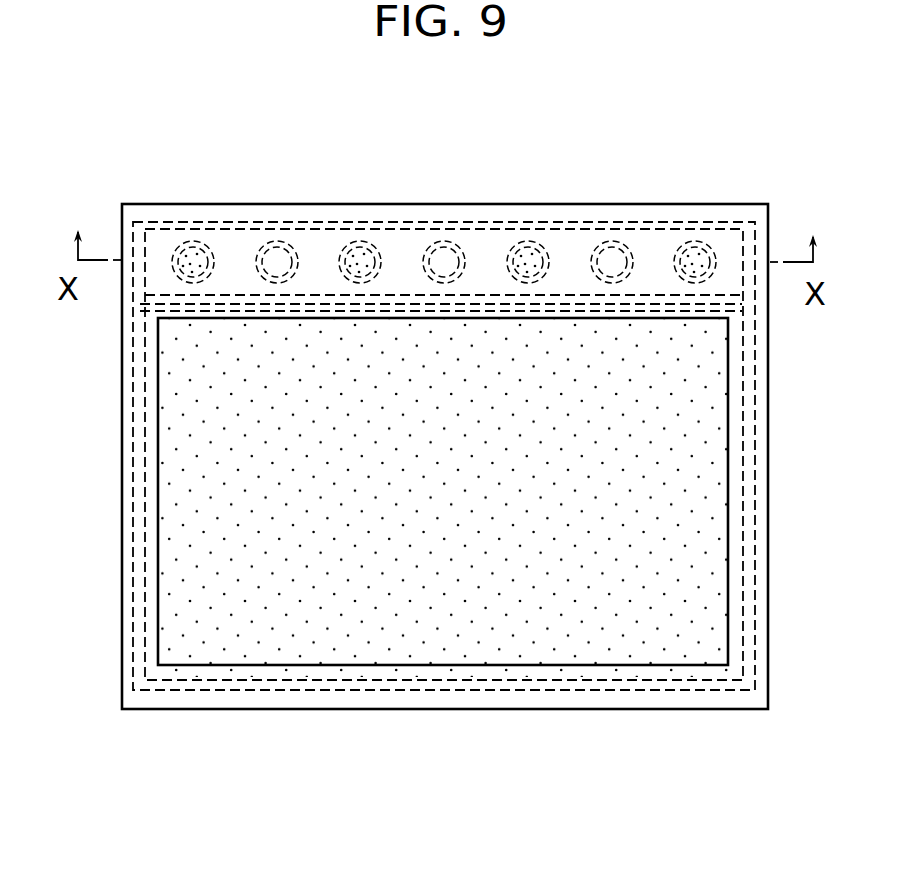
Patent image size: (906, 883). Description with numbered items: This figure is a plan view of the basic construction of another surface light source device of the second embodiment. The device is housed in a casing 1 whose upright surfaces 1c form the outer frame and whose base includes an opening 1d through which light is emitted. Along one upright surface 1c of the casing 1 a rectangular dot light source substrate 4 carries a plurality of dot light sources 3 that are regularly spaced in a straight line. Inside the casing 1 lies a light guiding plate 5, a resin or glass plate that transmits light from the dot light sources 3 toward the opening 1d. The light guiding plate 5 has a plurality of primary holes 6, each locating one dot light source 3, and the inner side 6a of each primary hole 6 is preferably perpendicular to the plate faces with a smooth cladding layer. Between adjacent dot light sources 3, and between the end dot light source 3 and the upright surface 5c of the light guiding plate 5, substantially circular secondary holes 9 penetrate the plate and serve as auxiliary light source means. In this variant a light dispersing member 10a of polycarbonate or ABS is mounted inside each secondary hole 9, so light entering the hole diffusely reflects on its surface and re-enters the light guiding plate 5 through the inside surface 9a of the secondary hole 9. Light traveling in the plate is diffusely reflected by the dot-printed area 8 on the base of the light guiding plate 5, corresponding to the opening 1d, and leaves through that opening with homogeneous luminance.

The casing 1 is at (240, 710).
The upright surface 1c is at (369, 208).
The opening 1d is at (540, 616).
The dot light source 3 is at (613, 242).
The dot light source substrate 4 is at (407, 257).
The light guiding plate 5 is at (622, 688).
The upright surface of the light guiding plate 5c is at (560, 233).
The primary hole 6 is at (301, 259).
The inner side of the primary hole 6a is at (283, 248).
The dot-printed area 8 is at (452, 633).
The secondary hole 9 is at (206, 250).
The inside surface of the secondary hole 9a is at (181, 240).
The light dispersing member 10a is at (533, 240).